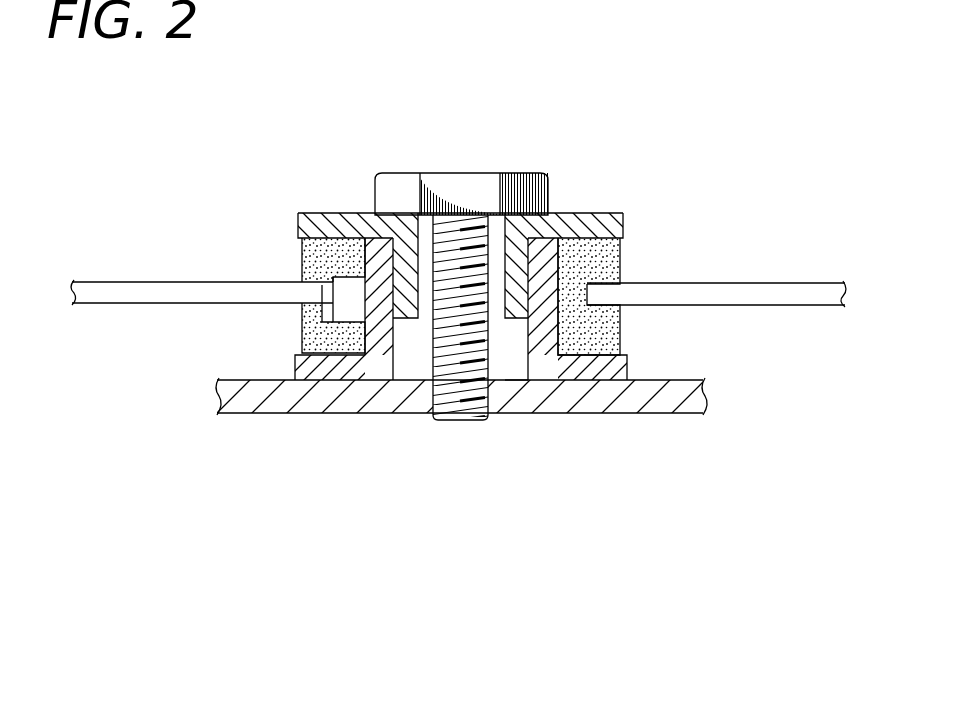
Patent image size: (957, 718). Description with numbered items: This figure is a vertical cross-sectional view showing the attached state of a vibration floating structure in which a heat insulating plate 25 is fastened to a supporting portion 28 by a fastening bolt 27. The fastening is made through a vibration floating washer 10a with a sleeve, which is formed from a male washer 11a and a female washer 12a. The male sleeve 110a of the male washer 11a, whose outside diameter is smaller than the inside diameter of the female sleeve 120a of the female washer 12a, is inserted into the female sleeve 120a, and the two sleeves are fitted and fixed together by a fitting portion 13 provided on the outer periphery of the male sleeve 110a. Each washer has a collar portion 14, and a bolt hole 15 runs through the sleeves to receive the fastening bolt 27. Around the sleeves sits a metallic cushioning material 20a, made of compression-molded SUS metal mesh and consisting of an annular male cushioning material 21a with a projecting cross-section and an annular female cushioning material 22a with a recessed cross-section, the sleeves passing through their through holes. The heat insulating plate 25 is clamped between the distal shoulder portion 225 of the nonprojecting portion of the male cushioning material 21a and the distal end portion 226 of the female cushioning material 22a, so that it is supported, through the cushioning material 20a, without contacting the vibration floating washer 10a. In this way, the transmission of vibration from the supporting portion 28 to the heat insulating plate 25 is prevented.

The vibration floating washer with a sleeve 10a is at (698, 210).
The male washer 11a is at (618, 213).
The female washer 12a is at (628, 365).
The fitting portion 13 is at (383, 273).
The collar portion 14 is at (590, 213).
The bolt hole 15 is at (424, 256).
The metallic cushioning material 20a is at (627, 253).
The male cushioning material 21a is at (623, 273).
The female cushioning material 22a is at (623, 337).
The heat insulating plate 25 is at (818, 283).
The fastening bolt 27 is at (474, 263).
The supporting portion 28 is at (676, 413).
The male sleeve 110a is at (512, 178).
The female sleeve 120a is at (524, 382).
The distal shoulder portion 225 is at (302, 252).
The distal end portion 226 is at (302, 332).